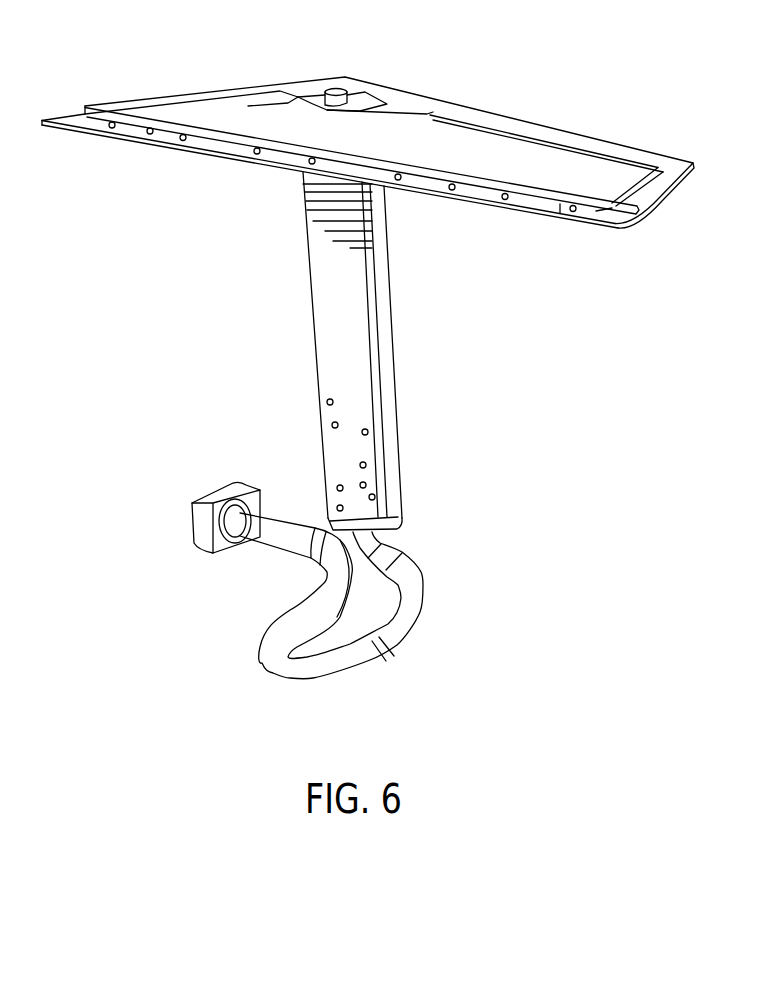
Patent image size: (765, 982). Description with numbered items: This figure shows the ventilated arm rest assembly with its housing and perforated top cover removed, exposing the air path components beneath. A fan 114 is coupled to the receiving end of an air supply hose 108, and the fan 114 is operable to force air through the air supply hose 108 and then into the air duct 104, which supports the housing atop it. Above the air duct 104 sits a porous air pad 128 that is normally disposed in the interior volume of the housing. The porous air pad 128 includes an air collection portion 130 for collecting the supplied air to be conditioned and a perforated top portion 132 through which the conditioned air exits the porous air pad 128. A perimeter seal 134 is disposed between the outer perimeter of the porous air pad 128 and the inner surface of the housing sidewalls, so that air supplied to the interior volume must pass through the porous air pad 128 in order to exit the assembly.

The air duct 104 is at (317, 362).
The air supply hose 108 is at (427, 580).
The fan 114 is at (218, 478).
The porous air pad 128 is at (580, 130).
The air collection portion 130 is at (553, 212).
The perforated top portion 132 is at (433, 143).
The perimeter seal 134 is at (143, 100).